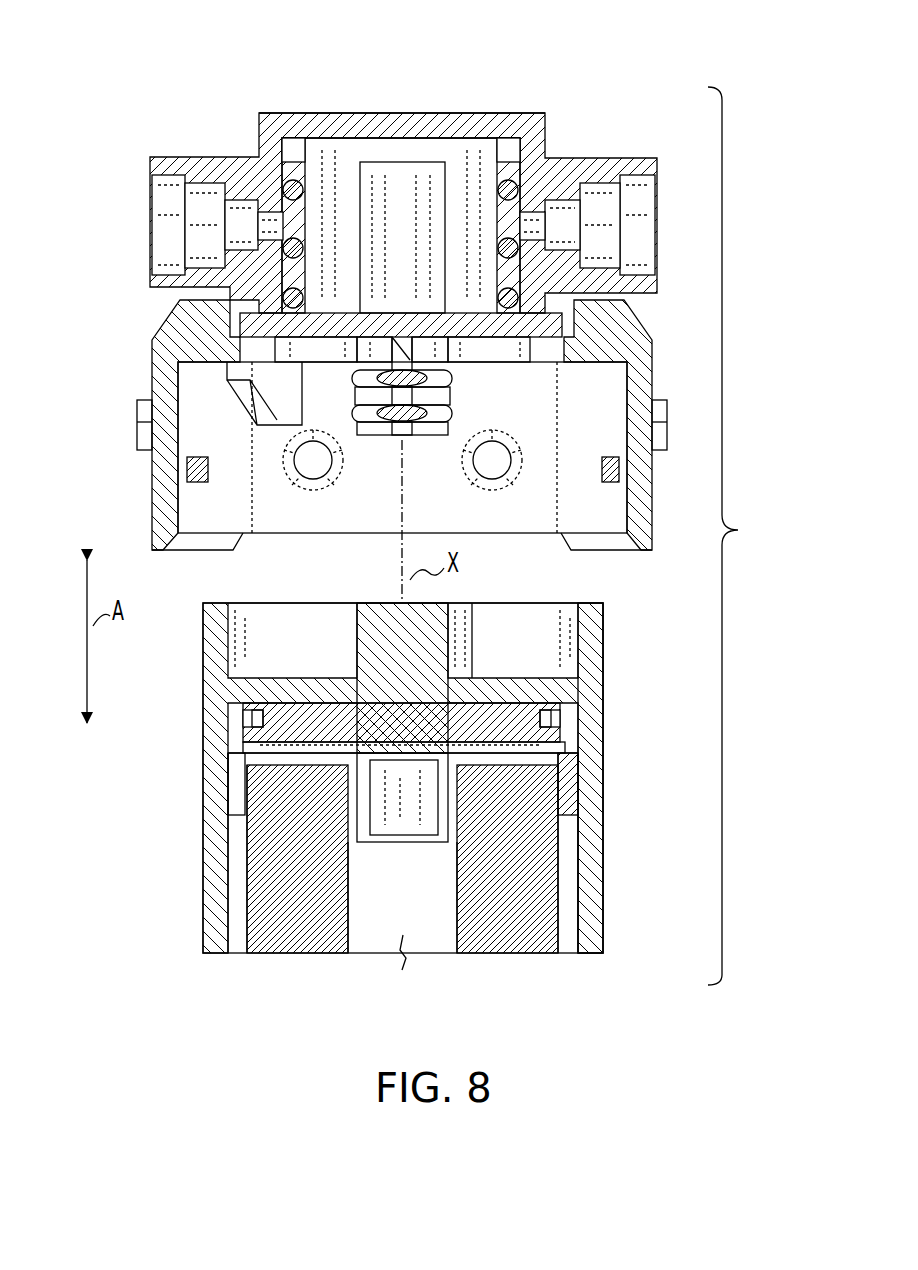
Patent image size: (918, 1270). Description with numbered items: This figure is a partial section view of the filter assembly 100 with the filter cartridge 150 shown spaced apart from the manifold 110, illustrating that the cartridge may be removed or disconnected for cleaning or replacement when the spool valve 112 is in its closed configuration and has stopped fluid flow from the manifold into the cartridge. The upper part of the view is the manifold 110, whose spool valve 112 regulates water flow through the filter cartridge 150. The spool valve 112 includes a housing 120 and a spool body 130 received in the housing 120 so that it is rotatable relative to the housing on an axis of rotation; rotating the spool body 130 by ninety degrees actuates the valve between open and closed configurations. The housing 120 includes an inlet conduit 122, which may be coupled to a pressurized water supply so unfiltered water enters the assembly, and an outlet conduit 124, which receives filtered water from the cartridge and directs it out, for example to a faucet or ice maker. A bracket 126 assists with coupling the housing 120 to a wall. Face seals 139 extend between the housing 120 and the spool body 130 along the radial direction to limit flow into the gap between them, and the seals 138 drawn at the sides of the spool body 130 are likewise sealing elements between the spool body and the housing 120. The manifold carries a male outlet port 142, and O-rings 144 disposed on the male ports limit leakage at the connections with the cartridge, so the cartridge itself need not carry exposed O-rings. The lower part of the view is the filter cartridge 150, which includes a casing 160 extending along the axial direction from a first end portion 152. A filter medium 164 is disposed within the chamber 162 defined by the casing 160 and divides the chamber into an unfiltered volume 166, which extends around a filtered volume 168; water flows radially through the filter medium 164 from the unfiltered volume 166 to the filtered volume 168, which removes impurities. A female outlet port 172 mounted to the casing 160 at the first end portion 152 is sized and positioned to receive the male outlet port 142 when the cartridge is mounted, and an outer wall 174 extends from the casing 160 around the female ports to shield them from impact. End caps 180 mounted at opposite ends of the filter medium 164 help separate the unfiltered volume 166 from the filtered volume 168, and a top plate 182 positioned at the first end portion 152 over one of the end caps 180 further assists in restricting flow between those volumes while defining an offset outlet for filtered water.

The filter assembly 100 is at (754, 536).
The manifold 110 is at (258, 155).
The spool valve 112 is at (338, 176).
The housing 120 is at (410, 118).
The inlet conduit 122 is at (160, 228).
The outlet conduit 124 is at (638, 228).
The bracket 126 is at (163, 470).
The spool body 130 is at (505, 150).
The O-ring seals 138 is at (518, 188).
The face seals 139 is at (505, 298).
The male outlet port 142 is at (422, 427).
The O-rings 144 is at (443, 373).
The filter cartridge 150 is at (202, 798).
The first end portion 152 is at (197, 657).
The casing 160 is at (592, 758).
The chamber 162 is at (562, 914).
The filter medium 164 is at (283, 945).
The unfiltered volume 166 is at (238, 936).
The filtered volume 168 is at (425, 932).
The female outlet port 172 is at (463, 628).
The outer wall 174 is at (592, 647).
The end caps 180 is at (572, 800).
The top plate 182 is at (562, 719).